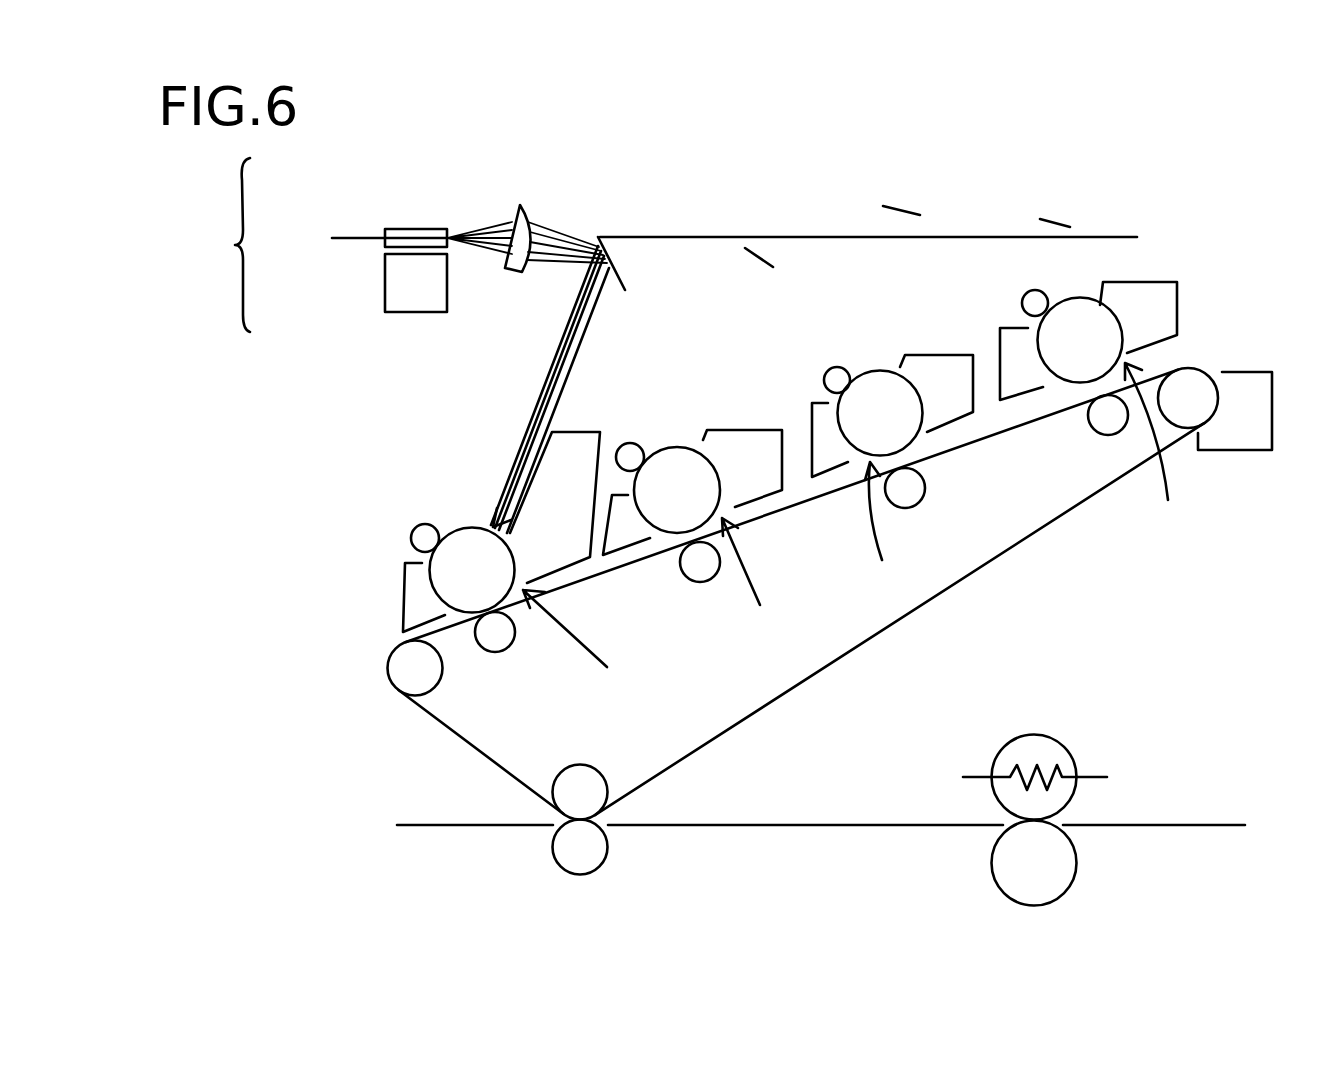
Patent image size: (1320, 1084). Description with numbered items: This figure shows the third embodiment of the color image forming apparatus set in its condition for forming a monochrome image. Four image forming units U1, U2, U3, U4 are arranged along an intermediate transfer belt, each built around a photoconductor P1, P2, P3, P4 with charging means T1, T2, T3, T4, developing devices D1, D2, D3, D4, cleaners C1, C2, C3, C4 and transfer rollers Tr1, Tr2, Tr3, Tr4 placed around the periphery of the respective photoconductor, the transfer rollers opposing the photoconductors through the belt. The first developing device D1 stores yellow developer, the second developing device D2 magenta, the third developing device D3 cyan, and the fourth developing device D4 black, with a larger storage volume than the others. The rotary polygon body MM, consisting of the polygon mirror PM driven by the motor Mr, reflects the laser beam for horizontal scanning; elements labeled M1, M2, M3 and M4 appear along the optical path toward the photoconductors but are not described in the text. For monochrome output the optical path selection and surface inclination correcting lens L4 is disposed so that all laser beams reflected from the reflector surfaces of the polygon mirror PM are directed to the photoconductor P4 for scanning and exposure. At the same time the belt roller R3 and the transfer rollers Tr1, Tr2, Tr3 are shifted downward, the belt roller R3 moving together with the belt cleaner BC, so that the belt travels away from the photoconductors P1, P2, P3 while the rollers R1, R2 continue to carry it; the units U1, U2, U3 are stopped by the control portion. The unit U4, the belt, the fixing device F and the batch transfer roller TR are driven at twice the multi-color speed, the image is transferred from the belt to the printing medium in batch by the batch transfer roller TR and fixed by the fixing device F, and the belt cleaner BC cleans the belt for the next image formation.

The rotary polygon body MM is at (207, 245).
The polygon mirror PM is at (385, 229).
The motor Mr is at (397, 290).
The optical path selection and surface inclination correcting lens L4 is at (523, 210).
The mirror M2 is at (612, 267).
The mirror M3 is at (905, 213).
The mirror M4 is at (773, 267).
The mirror M1 is at (1055, 225).
The photoconductor P1 is at (1087, 298).
The photoconductor P2 is at (925, 415).
The photoconductor P3 is at (717, 473).
The photoconductor P4 is at (472, 527).
The first developing device D1 is at (1150, 282).
The second developing device D2 is at (935, 355).
The third developing device D3 is at (748, 430).
The fourth developing device D4 is at (582, 432).
The cleaner C1 is at (1030, 392).
The cleaner C2 is at (830, 470).
The cleaner C3 is at (640, 545).
The cleaner C4 is at (405, 596).
The charging means T1 is at (1028, 290).
The charging means T2 is at (840, 367).
The charging means T3 is at (635, 443).
The charging means T4 is at (415, 525).
The transfer roller Tr1 is at (1110, 435).
The transfer roller Tr2 is at (910, 509).
The transfer roller Tr3 is at (700, 582).
The transfer roller Tr4 is at (500, 652).
The image forming unit U1 is at (1168, 453).
The image forming unit U2 is at (874, 534).
The image forming unit U3 is at (769, 586).
The image forming unit U4 is at (595, 652).
The belt roller R1 is at (388, 662).
The belt roller R2 is at (553, 780).
The belt roller R3 is at (1200, 368).
The belt cleaner BC is at (1245, 450).
The batch transfer roller TR is at (585, 875).
The fixing device F is at (1042, 735).